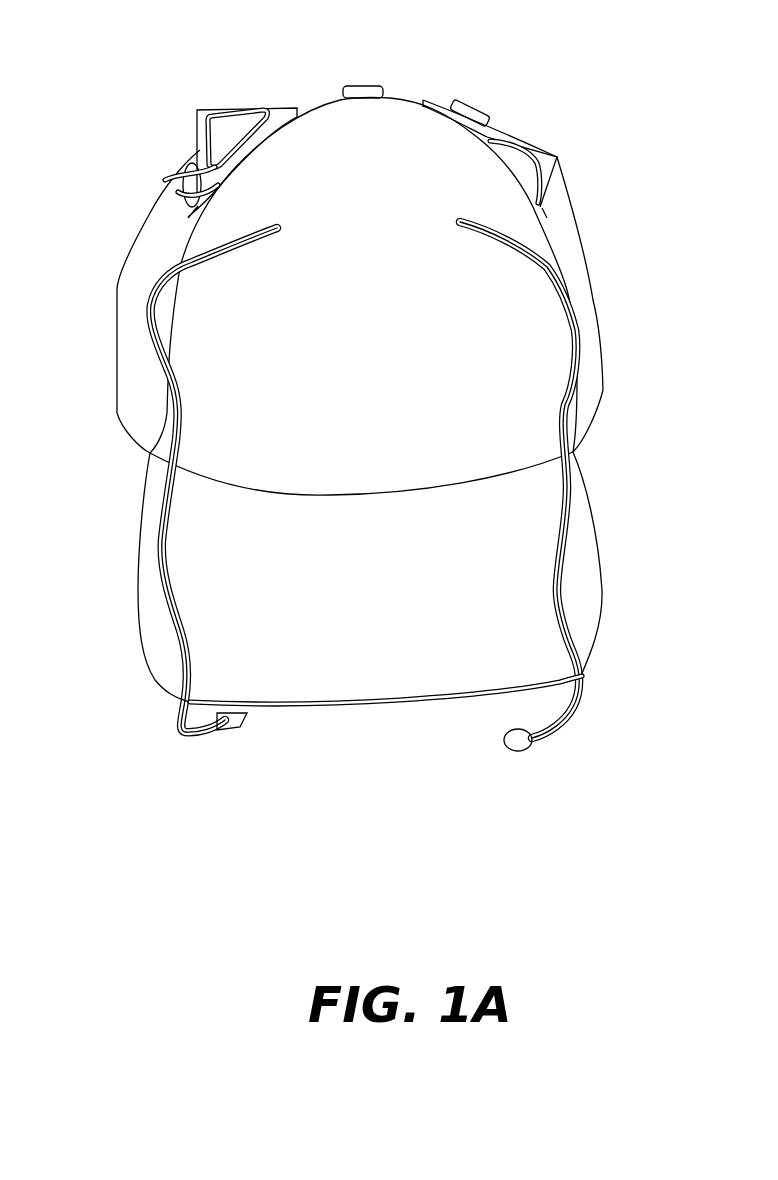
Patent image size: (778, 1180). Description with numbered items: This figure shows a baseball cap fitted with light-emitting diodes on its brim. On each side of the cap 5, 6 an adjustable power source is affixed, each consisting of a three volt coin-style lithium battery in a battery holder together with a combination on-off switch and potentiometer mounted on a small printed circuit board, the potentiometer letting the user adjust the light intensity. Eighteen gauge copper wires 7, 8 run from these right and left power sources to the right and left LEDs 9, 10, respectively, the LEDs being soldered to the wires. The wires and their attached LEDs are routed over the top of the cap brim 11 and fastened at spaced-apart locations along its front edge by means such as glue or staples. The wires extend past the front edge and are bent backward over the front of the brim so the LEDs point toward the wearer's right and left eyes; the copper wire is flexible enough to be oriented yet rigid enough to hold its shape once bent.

The side of the cap 5 is at (517, 135).
The side of the cap 6 is at (240, 107).
The copper wire 7 is at (160, 578).
The copper wire 8 is at (567, 555).
The right LED 9 is at (227, 730).
The left LED 10 is at (520, 751).
The cap brim 11 is at (365, 706).